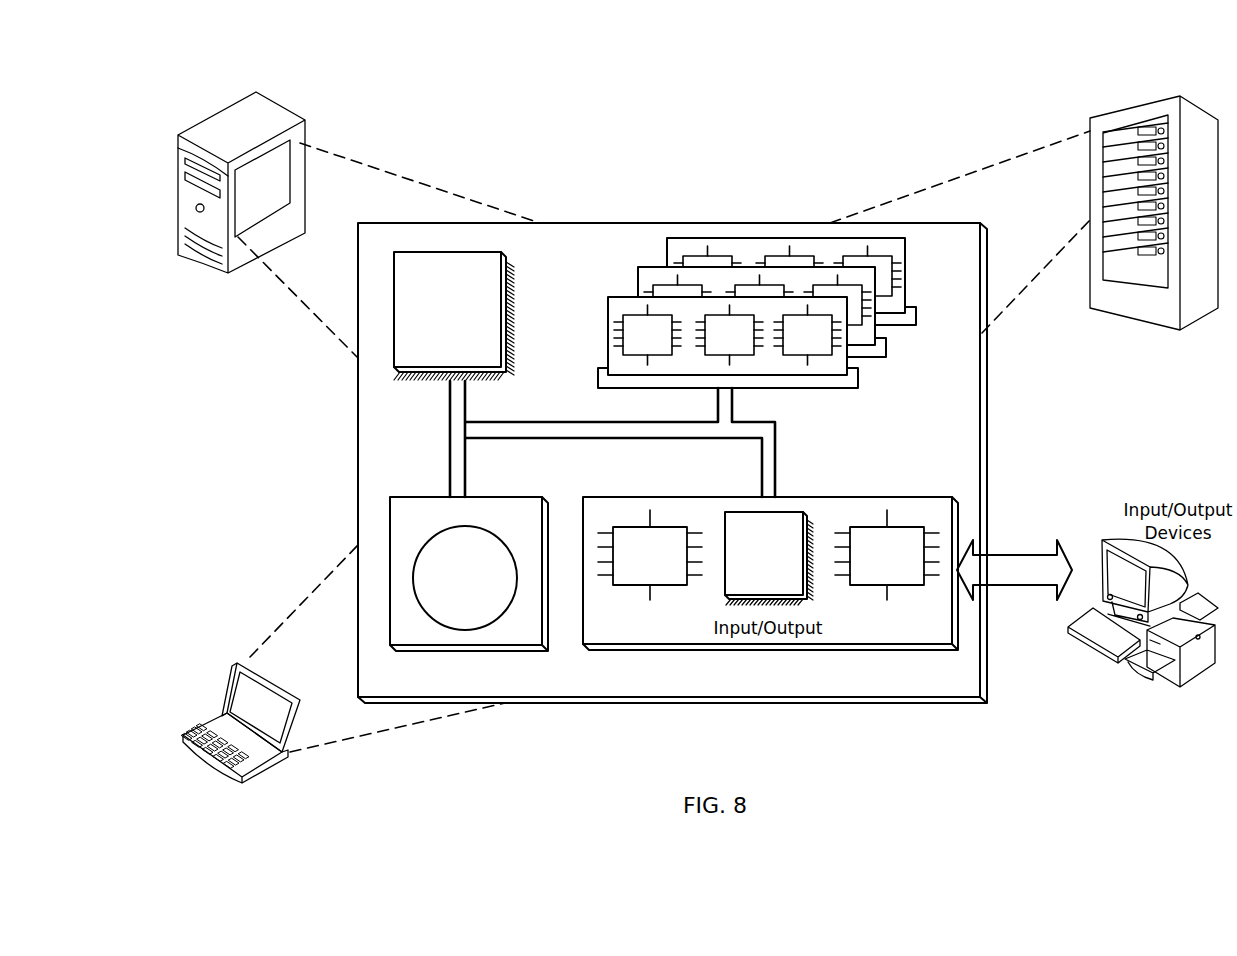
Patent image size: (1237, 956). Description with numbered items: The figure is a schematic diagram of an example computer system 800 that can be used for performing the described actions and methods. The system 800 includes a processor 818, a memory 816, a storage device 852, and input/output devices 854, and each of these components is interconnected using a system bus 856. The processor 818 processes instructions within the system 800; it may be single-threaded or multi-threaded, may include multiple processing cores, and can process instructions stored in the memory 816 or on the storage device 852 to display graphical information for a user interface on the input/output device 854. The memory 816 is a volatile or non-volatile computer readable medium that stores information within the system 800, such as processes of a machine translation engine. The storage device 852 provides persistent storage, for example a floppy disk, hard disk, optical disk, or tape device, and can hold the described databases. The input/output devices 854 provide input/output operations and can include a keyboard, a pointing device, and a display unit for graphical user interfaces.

The computer system 800 is at (528, 152).
The processor 818 is at (454, 316).
The memory 816 is at (910, 359).
The system bus 856 is at (616, 438).
The storage device 852 is at (469, 574).
The input/output devices 854 is at (1100, 546).